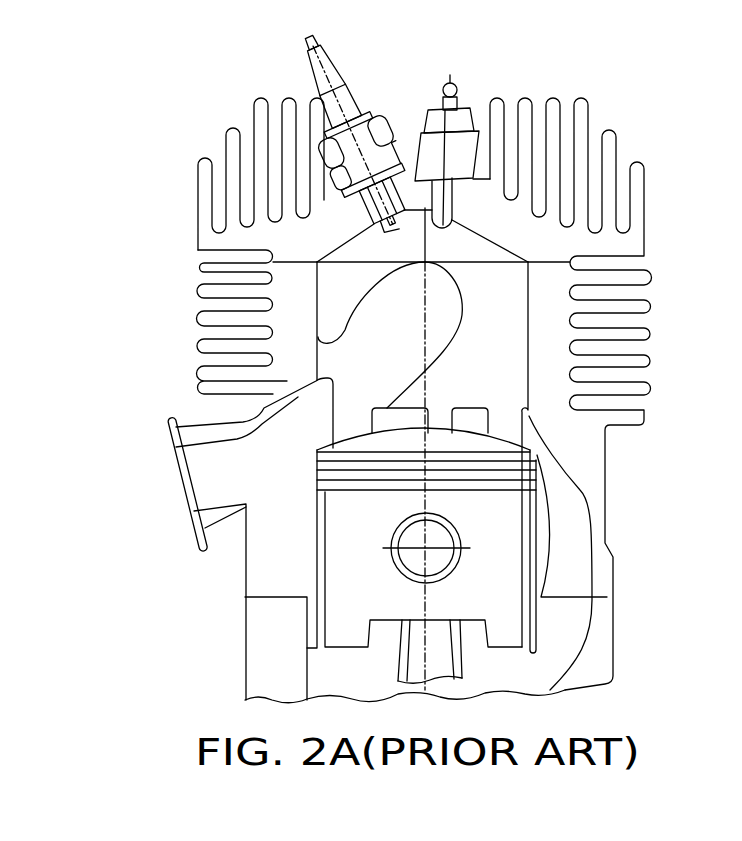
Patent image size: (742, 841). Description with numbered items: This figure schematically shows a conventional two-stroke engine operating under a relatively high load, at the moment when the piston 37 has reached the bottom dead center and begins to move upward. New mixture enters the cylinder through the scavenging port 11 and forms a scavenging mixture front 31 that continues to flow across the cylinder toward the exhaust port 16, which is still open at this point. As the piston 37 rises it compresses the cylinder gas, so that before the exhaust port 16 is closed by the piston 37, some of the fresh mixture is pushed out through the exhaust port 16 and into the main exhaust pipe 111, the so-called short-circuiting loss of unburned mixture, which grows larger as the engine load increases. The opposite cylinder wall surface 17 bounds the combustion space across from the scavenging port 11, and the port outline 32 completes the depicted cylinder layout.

The scavenging port 11 is at (397, 420).
The exhaust port 16 is at (280, 435).
The opposite cylinder wall surface 17 is at (287, 383).
The scavenging mixture front 31 is at (322, 292).
The scavenging port 32 is at (452, 317).
The piston 37 is at (510, 520).
The main exhaust pipe 111 is at (126, 449).